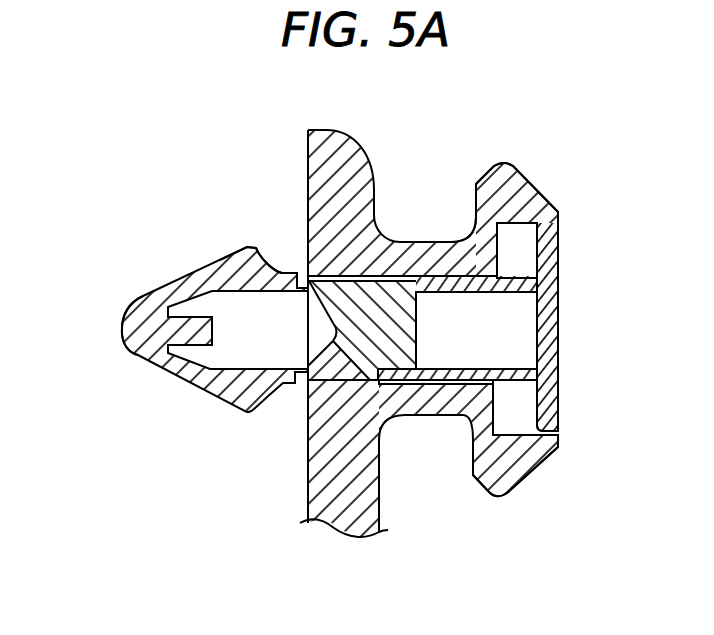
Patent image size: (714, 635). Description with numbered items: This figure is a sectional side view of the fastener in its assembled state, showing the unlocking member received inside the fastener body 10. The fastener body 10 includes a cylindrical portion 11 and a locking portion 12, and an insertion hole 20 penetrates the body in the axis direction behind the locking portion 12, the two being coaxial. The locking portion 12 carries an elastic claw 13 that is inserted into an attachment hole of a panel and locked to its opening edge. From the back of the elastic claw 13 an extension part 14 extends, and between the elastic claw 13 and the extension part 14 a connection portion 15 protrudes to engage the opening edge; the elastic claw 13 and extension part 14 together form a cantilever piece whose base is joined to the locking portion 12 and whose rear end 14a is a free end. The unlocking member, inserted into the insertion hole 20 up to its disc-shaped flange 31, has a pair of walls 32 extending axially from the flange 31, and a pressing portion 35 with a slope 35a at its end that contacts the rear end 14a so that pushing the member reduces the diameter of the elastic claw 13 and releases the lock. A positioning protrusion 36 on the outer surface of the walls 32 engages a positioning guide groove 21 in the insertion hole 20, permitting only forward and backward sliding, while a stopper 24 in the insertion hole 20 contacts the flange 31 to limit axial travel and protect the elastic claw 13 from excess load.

The fastener body 10 is at (497, 505).
The cylindrical portion 11 is at (535, 183).
The locking portion 12 is at (122, 334).
The elastic claw 13 is at (194, 271).
The extension part 14 is at (280, 274).
The rear end 14a is at (295, 383).
The connection portion 15 is at (247, 248).
The insertion hole 20 is at (520, 264).
The positioning guide groove 21 is at (388, 275).
The stopper 24 is at (495, 414).
The flange 31 is at (549, 326).
The walls 32 is at (518, 380).
The pressing portion 35 is at (362, 357).
The slope 35a is at (308, 351).
The positioning protrusion 36 is at (465, 274).